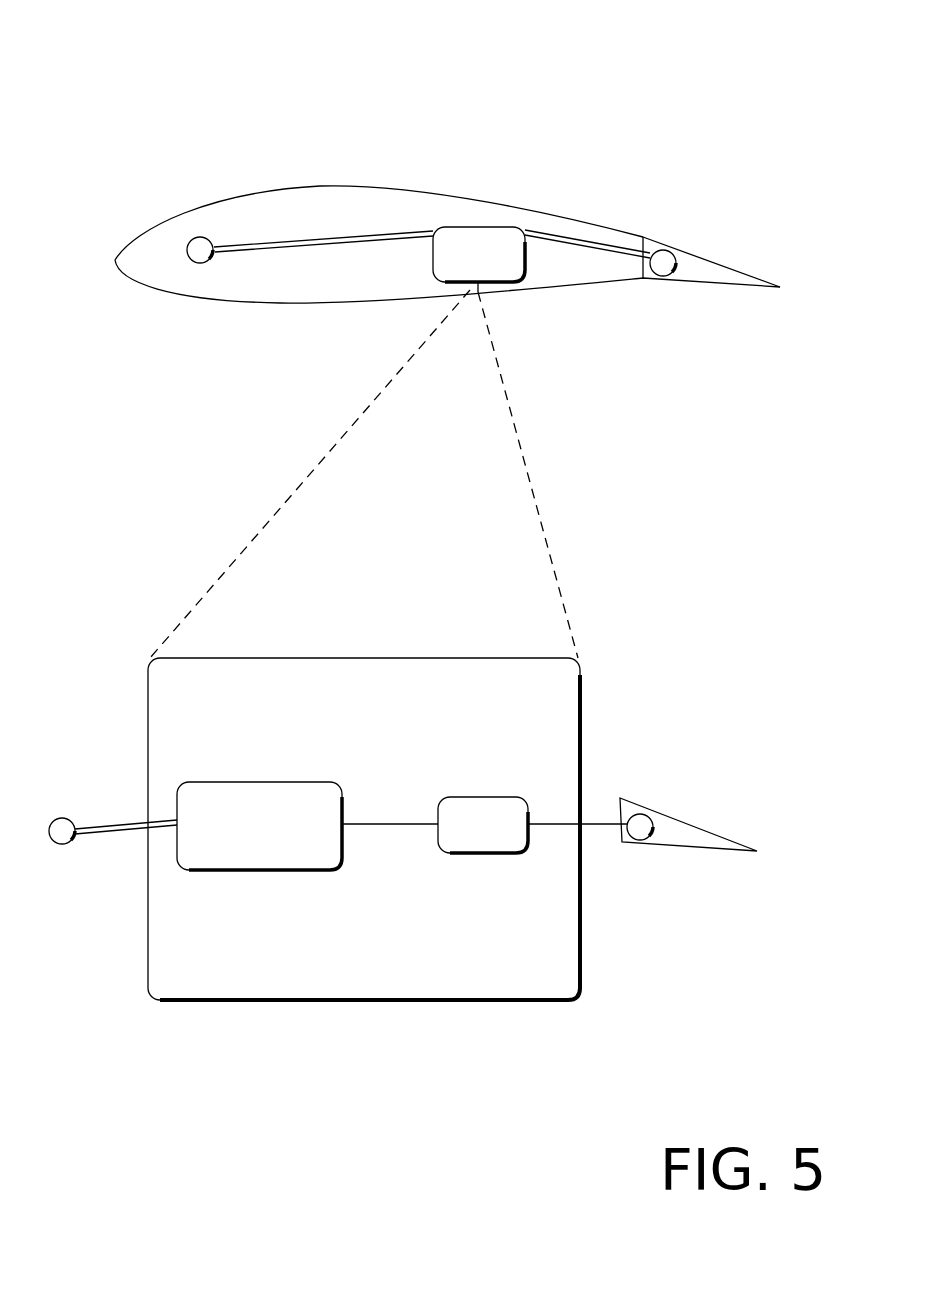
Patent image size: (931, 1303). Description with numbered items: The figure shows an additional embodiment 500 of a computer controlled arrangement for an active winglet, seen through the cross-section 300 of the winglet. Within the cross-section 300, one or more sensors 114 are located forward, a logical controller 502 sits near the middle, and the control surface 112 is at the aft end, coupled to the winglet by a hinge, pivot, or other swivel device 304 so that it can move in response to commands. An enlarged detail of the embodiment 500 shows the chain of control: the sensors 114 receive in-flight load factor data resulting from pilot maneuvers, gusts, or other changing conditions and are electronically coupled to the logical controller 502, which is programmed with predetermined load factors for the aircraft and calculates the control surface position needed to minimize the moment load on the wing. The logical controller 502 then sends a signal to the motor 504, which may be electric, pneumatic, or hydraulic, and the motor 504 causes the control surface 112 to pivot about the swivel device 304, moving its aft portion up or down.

The embodiment 500 is at (642, 50).
The cross-section 300 is at (388, 183).
The control surface 112 is at (697, 262).
The sensors 114 is at (200, 250).
The swivel device 304 is at (663, 263).
The logical controller 502 is at (477, 252).
The motor 504 is at (483, 824).